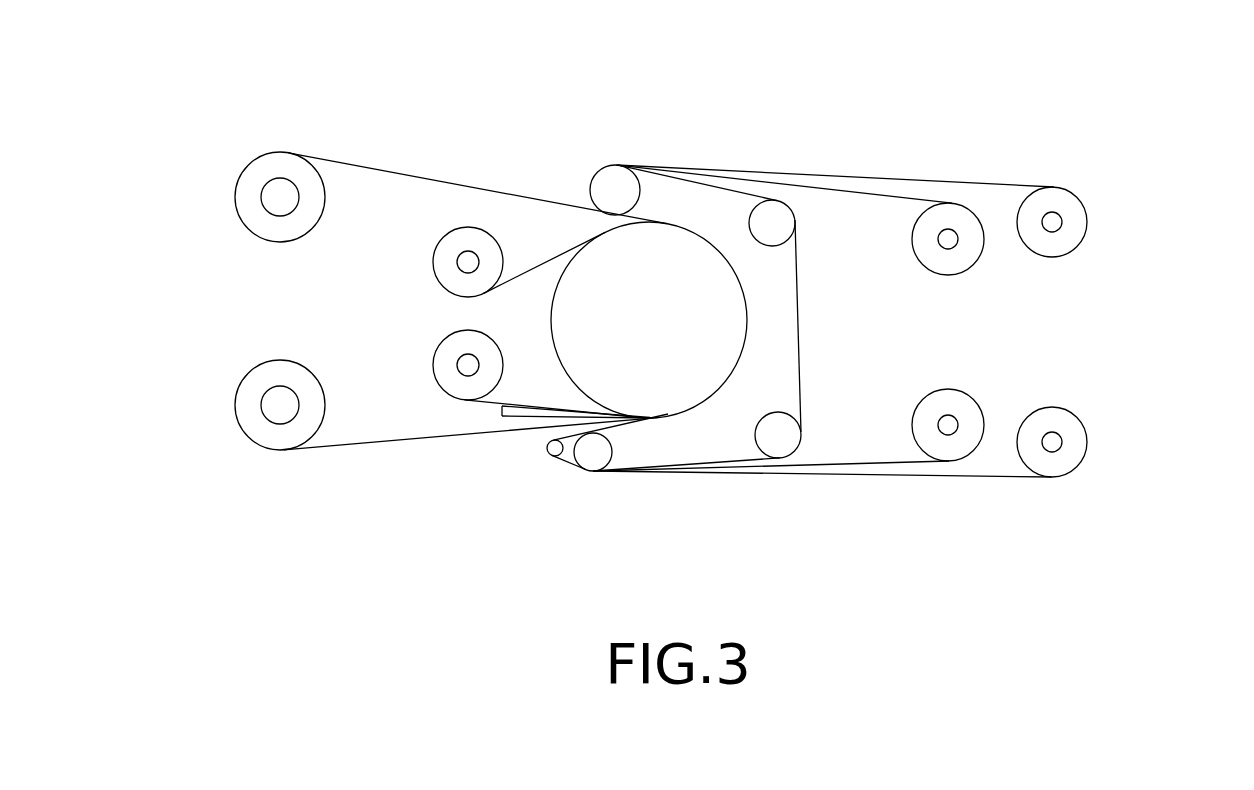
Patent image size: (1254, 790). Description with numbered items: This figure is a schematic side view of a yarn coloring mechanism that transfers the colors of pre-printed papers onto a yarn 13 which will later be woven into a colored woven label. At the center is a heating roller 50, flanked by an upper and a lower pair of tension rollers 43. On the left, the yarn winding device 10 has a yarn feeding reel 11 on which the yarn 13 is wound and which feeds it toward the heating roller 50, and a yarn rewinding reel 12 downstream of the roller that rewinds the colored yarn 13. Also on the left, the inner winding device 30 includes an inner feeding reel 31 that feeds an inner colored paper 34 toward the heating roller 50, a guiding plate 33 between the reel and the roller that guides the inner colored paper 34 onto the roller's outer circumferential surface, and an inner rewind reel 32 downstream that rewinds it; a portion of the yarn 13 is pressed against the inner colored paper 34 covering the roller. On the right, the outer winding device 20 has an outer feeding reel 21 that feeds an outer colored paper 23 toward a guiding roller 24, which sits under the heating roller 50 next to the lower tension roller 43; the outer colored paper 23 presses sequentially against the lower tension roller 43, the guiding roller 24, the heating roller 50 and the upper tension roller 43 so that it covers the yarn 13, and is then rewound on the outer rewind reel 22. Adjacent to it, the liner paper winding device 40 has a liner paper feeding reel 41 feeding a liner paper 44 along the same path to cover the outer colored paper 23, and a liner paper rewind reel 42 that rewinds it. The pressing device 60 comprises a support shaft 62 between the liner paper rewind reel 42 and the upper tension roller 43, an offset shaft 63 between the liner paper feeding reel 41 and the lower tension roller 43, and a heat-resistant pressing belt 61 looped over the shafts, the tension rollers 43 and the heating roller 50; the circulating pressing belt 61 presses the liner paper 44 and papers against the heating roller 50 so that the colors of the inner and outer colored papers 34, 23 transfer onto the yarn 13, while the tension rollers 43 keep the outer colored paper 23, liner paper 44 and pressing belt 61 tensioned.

The yarn winding device 10 is at (238, 253).
The yarn feeding reel 11 is at (248, 405).
The yarn rewinding reel 12 is at (238, 190).
The yarn 13 is at (397, 442).
The outer winding device 20 is at (1119, 300).
The outer feeding reel 21 is at (1078, 443).
The outer rewind reel 22 is at (1073, 237).
The outer colored paper 23 is at (955, 476).
The guiding roller 24 is at (553, 458).
The inner winding device 30 is at (403, 313).
The inner feeding reel 31 is at (442, 372).
The inner rewind reel 32 is at (437, 262).
The guiding plate 33 is at (513, 413).
The inner colored paper 34 is at (541, 252).
The liner paper winding device 40 is at (961, 278).
The liner paper feeding reel 41 is at (928, 407).
The liner paper rewind reel 42 is at (960, 257).
The tension rollers 43 is at (613, 180).
The liner paper 44 is at (855, 464).
The heating roller 50 is at (670, 387).
The pressing device 60 is at (802, 317).
The pressing belt 61 is at (798, 288).
The support shaft 62 is at (767, 213).
The offset shaft 63 is at (778, 445).